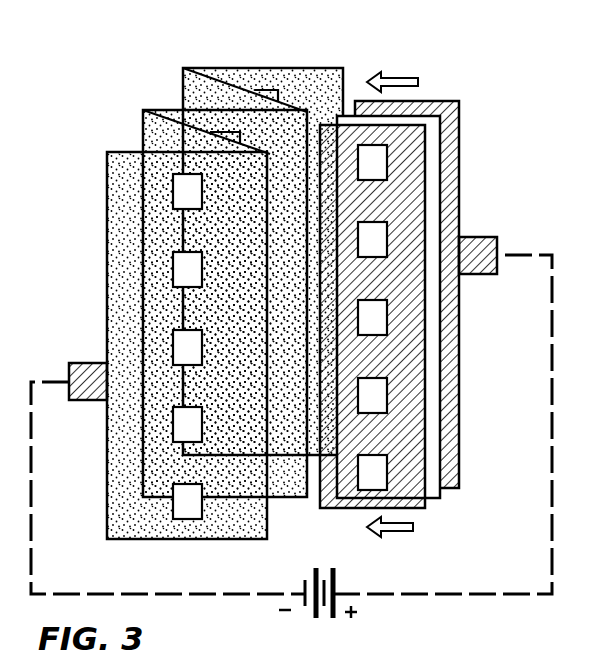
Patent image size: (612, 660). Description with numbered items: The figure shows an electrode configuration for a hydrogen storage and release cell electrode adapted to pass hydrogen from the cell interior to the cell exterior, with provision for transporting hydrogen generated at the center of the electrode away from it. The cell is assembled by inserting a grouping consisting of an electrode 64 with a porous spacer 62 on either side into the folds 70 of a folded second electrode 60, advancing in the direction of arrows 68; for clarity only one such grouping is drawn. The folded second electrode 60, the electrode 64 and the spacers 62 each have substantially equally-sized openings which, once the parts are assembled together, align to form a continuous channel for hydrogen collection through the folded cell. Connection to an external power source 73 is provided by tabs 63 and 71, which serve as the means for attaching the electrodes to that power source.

The folded second electrode 60 is at (253, 68).
The porous spacer 62 is at (427, 268).
The tab 63 is at (478, 237).
The electrode 64 is at (432, 138).
The arrows 68 is at (386, 72).
The folds 70 is at (196, 125).
The tab 71 is at (83, 363).
The external power source 73 is at (322, 616).